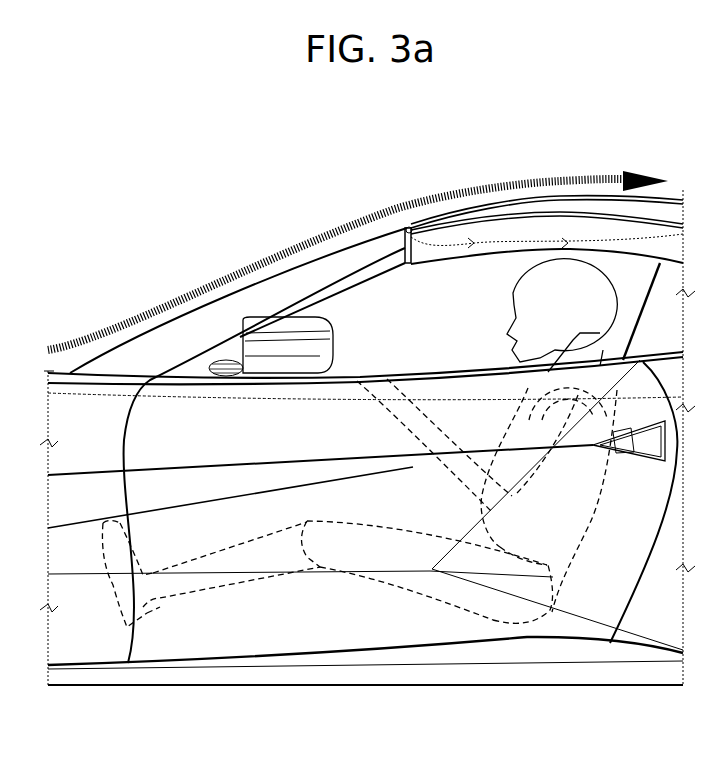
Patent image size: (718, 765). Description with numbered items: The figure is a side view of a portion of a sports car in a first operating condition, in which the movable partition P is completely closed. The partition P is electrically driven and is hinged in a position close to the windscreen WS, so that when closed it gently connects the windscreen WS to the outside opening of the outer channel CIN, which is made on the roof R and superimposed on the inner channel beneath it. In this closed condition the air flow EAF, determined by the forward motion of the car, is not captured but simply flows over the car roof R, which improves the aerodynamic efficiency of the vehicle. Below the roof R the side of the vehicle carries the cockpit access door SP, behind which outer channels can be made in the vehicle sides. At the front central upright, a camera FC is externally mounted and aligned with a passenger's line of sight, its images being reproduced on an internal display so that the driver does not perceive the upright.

The windscreen WS is at (179, 266).
The camera FC is at (407, 227).
The air flow EAF is at (432, 197).
The movable partition P is at (495, 198).
The outer channel CIN is at (590, 212).
The roof R is at (685, 190).
The cockpit access door SP is at (270, 640).